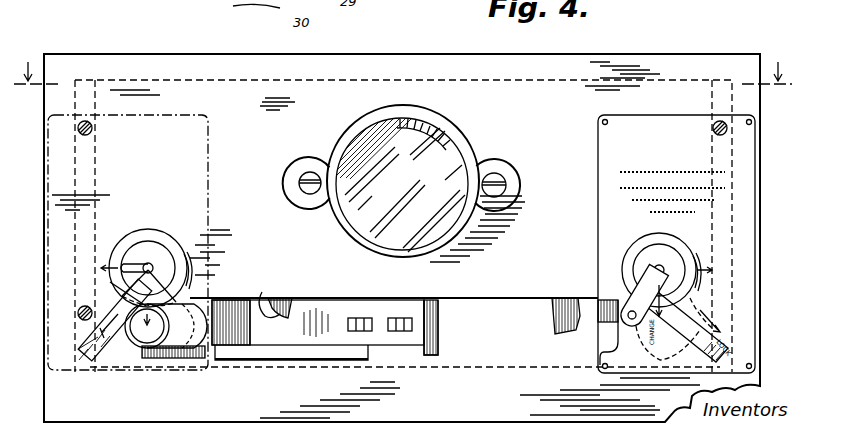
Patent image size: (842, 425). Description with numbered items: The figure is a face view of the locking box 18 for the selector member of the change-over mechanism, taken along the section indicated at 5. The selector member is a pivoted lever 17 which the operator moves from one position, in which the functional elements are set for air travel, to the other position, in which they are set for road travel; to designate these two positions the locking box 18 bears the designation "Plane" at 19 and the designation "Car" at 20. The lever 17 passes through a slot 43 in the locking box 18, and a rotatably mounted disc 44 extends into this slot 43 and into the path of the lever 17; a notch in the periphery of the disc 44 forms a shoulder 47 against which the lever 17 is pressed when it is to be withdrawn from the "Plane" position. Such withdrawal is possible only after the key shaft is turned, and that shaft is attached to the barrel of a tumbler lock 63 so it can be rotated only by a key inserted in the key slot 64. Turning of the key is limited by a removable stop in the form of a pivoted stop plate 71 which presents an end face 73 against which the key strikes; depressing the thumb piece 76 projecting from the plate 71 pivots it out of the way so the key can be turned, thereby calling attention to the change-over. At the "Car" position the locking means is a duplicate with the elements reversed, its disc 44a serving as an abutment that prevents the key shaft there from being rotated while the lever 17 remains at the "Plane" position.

The section line 5- 5 is at (403, 82).
The selector lever 17 is at (318, 312).
The locking box 18 is at (110, 64).
The designation "Plane" 19 is at (173, 150).
The designation "Car" 20 is at (633, 144).
The slot 43 is at (318, 360).
The disc 44 is at (287, 298).
The disc 44a is at (565, 306).
The shoulder 47 is at (265, 298).
The tumbler lock 63 is at (149, 248).
The key slot 64 is at (131, 264).
The stop plate 71 is at (174, 256).
The end face 73 is at (118, 281).
The thumb piece 76 is at (113, 343).